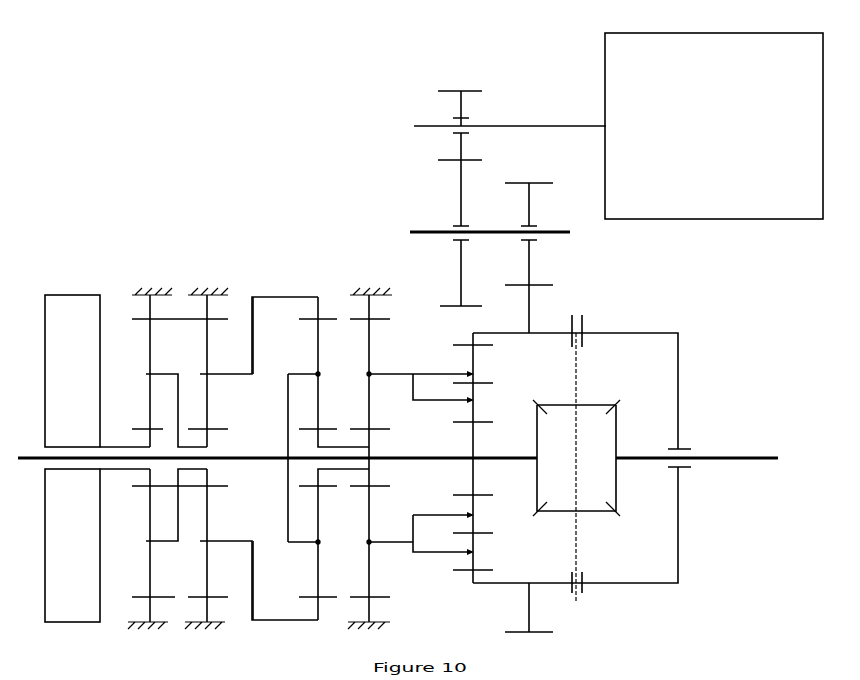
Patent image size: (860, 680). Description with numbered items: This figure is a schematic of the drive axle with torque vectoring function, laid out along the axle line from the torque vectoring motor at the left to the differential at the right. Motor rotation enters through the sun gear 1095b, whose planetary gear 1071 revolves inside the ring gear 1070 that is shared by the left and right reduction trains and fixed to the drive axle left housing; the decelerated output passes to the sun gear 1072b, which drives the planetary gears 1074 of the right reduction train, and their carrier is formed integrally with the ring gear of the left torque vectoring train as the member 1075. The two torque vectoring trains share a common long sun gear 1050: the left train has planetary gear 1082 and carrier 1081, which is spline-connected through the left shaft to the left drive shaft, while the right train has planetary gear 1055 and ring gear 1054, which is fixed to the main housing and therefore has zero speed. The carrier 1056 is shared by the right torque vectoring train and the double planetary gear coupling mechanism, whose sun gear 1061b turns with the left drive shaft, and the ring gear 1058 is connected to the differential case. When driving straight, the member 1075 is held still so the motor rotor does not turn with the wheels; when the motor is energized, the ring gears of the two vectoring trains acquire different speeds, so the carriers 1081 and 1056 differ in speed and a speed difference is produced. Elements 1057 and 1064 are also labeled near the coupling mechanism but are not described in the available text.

The ring gear 1070 is at (180, 394).
The planetary gear 1071 is at (163, 457).
The planetary gears 1074 is at (259, 458).
The sun gear 1095b is at (138, 513).
The sun gear 1072b is at (218, 513).
The integral carrier and ring gear member 1075 is at (283, 450).
The carrier 1081 is at (335, 458).
The planetary gear 1082 is at (331, 458).
The ring gear 1054 is at (376, 450).
The planetary gear 1055 is at (357, 458).
The long sun gear 1050 is at (344, 450).
The carrier 1056 is at (443, 451).
The sun gear 1061b is at (455, 458).
The gear 1057 is at (478, 420).
The gear 1064 is at (479, 476).
The ring gear 1058 is at (569, 456).